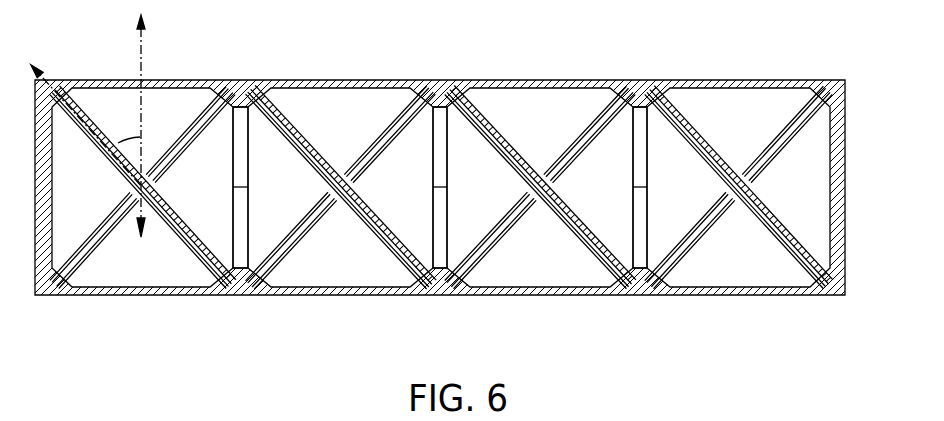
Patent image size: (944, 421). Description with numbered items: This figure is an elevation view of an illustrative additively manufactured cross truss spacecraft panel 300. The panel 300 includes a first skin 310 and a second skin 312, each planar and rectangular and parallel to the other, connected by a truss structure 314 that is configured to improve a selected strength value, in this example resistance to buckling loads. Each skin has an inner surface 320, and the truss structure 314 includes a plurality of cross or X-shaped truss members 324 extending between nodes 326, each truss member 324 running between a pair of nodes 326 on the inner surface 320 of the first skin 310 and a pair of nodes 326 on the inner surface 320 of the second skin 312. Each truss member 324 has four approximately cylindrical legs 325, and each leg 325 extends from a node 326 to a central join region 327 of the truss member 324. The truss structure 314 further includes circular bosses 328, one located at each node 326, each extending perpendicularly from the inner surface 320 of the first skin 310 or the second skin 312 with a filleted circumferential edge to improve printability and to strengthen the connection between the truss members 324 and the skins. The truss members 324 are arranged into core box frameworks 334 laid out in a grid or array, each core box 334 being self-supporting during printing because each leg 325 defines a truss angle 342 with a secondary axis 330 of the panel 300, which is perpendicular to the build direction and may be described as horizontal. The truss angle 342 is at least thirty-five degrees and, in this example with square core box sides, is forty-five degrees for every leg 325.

The cross truss spacecraft panel 300 is at (637, 70).
The first skin 310 is at (758, 290).
The second skin 312 is at (750, 83).
The truss structure 314 is at (812, 158).
The inner surface 320 is at (546, 97).
The truss member 324 is at (243, 130).
The leg 325 is at (310, 157).
The node 326 is at (238, 303).
The central join region 327 is at (338, 192).
The circular boss 328 is at (445, 92).
The secondary axis 330 is at (143, 60).
The core box framework 334 is at (560, 302).
The truss angle 342 is at (120, 140).